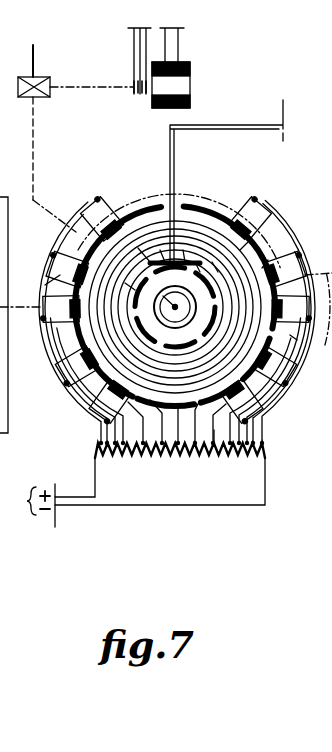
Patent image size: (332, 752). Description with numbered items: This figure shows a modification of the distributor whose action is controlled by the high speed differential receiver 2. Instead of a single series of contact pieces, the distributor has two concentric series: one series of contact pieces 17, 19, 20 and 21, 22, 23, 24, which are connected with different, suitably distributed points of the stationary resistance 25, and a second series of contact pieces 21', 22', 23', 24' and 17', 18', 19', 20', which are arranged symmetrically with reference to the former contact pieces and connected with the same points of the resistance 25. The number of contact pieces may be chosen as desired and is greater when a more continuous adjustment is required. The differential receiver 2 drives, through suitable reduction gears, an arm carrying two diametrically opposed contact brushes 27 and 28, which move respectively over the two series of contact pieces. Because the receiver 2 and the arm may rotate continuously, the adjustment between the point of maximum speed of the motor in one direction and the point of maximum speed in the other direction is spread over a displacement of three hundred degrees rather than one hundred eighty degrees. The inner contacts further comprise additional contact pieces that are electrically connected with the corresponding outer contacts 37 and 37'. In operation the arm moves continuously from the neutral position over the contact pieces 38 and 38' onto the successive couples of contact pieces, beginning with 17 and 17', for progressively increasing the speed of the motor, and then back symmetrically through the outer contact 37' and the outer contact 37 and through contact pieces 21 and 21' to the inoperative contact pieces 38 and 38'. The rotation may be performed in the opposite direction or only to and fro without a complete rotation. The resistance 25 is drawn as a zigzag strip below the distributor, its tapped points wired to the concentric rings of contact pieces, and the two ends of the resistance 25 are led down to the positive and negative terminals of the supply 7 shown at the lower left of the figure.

The high speed differential receiver 2 is at (179, 87).
The power supply 7 is at (139, 492).
The contact piece 17 is at (288, 322).
The contact piece 17' is at (136, 245).
The contact piece 18' is at (214, 323).
The contact piece 19 is at (309, 351).
The contact piece 19' is at (117, 278).
The contact piece 20 is at (318, 300).
The contact piece 20' is at (78, 385).
The contact piece 21 is at (70, 324).
The contact piece 21' is at (202, 256).
The contact piece 22 is at (76, 328).
The contact piece 22' is at (223, 256).
The contact piece 23 is at (78, 380).
The contact piece 23' is at (261, 236).
The contact piece 24 is at (39, 276).
The contact piece 24' is at (279, 255).
The stationary resistance 25 is at (172, 460).
The contact brush 27 is at (162, 248).
The contact brush 28 is at (213, 452).
The outer contact 37 is at (125, 285).
The outer contact 37' is at (253, 288).
The contact piece 38 is at (186, 336).
The contact piece 38' is at (192, 242).